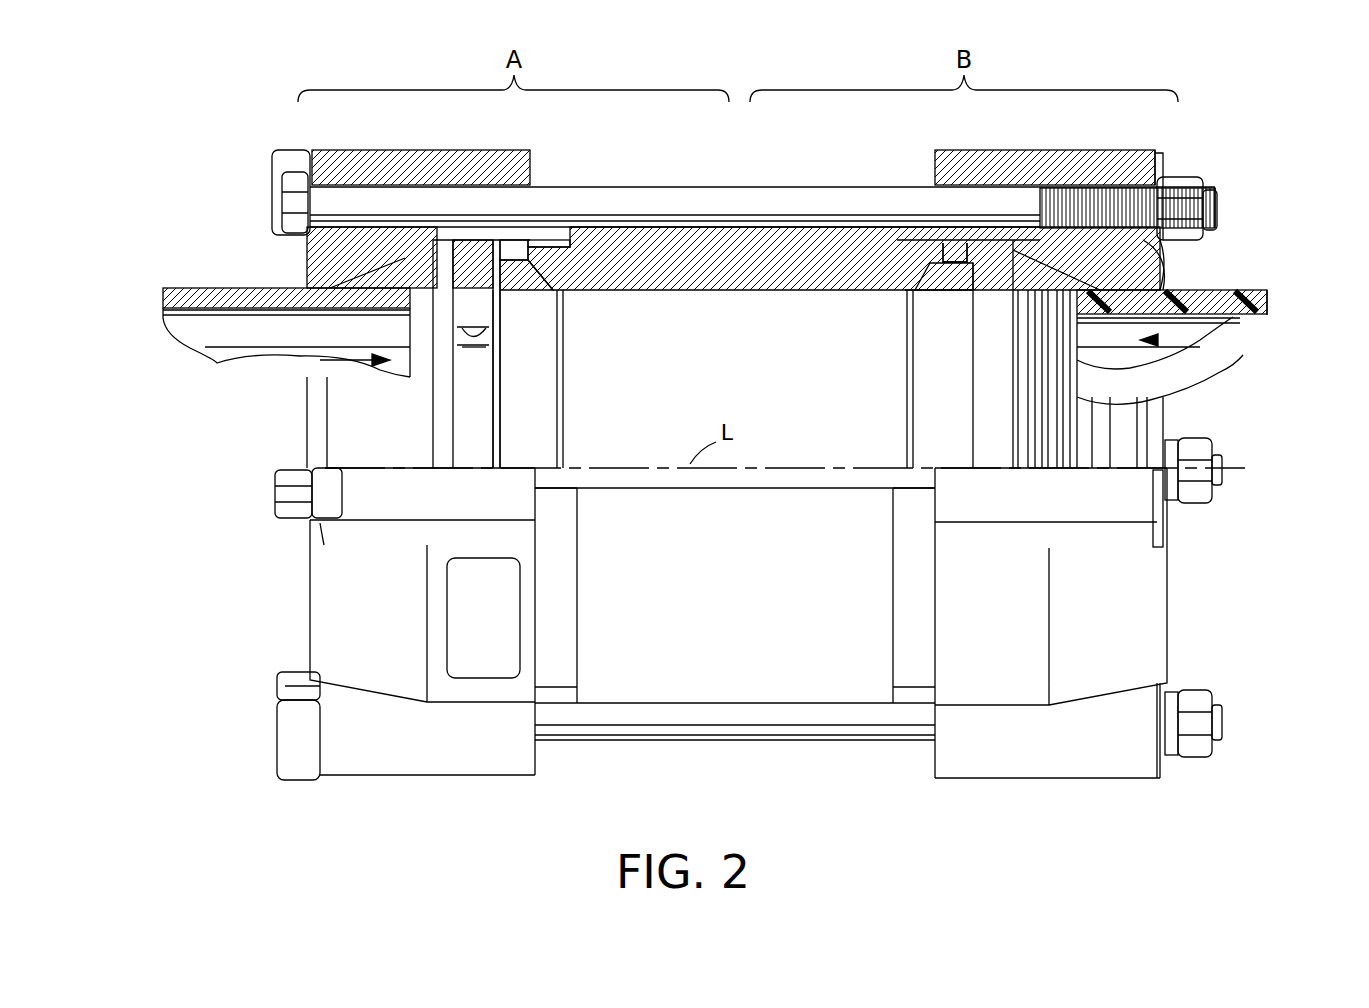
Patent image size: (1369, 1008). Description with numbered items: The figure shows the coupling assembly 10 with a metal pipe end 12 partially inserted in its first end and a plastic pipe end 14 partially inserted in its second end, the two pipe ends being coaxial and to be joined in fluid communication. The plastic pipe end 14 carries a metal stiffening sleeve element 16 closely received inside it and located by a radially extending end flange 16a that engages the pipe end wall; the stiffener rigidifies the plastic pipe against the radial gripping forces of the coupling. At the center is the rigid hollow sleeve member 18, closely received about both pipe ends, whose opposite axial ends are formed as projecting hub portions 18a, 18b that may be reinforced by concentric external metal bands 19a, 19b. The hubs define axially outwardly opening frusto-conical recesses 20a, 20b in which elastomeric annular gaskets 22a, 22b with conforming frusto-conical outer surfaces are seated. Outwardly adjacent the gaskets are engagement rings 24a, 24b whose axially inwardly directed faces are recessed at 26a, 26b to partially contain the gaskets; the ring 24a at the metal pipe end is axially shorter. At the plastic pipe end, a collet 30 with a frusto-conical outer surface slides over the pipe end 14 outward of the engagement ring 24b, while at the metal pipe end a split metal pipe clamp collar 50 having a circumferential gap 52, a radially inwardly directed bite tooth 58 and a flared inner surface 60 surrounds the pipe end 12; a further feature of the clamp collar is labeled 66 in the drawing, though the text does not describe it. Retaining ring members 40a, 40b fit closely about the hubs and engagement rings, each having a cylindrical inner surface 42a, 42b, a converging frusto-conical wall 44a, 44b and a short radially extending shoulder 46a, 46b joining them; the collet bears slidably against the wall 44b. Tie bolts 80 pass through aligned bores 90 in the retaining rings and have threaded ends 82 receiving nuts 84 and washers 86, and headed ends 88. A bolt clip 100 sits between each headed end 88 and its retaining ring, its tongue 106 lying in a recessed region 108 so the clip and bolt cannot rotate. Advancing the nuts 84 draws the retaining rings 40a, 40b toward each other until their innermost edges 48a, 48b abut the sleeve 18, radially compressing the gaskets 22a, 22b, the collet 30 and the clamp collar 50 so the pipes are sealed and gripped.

The coupling assembly 10 is at (716, 790).
The metal pipe end 12 is at (182, 273).
The plastic pipe end 14 is at (1287, 280).
The metal stiffening sleeve element 16 is at (1200, 320).
The radially extending end flange 16a is at (1080, 330).
The hollow sleeve member 18 is at (658, 240).
The first hub portion 18a is at (547, 258).
The second hub portion 18b is at (903, 258).
The first concentric external metal band 19a is at (555, 597).
The second concentric external metal band 19b is at (903, 597).
The first frusto-conical recess 20a is at (558, 385).
The second frusto-conical recess 20b is at (906, 295).
The first annular gasket 22a is at (530, 292).
The second annular gasket 22b is at (950, 294).
The first engagement ring 24a is at (497, 420).
The second engagement ring 24b is at (988, 300).
The first recessed face 26a is at (500, 293).
The second recessed face 26b is at (975, 408).
The collet 30 is at (1005, 397).
The first retaining ring member 40a is at (456, 790).
The second retaining ring member 40b is at (1047, 792).
The first cylindrical inner surface 42a is at (467, 253).
The second cylindrical inner diameter surface 42b is at (954, 245).
The first frusto-conical wall 44a is at (397, 268).
The second frusto-conical wall 44b is at (1133, 282).
The first radially extending shoulder 46a is at (440, 265).
The second radially extending shoulder 46b is at (1010, 255).
The first innermost edge 48a is at (535, 670).
The second innermost edge 48b is at (932, 670).
The metal pipe clamp collar 50 is at (487, 453).
The circumferential gap 52 is at (487, 346).
The bite tooth 58 is at (462, 300).
The inner surface of clamp ring 60 is at (452, 325).
The seal lip 66 is at (472, 345).
The tie bolt 80 is at (730, 203).
The threaded end 82 is at (1217, 210).
The nut 84 is at (1207, 497).
The washer 86 is at (1172, 500).
The headed end 88 is at (287, 208).
The aligned bore 90 is at (392, 192).
The bolt clip 100 is at (262, 147).
The tongue 106 is at (330, 495).
The recessed region 108 is at (353, 513).